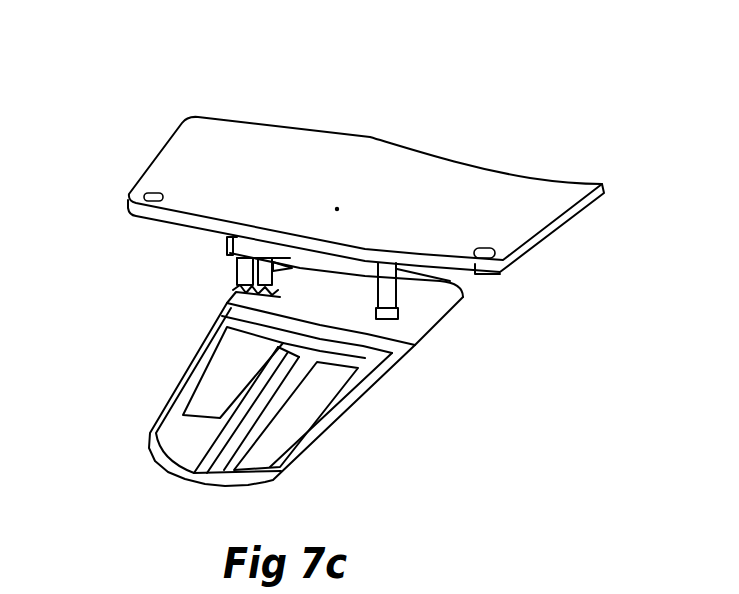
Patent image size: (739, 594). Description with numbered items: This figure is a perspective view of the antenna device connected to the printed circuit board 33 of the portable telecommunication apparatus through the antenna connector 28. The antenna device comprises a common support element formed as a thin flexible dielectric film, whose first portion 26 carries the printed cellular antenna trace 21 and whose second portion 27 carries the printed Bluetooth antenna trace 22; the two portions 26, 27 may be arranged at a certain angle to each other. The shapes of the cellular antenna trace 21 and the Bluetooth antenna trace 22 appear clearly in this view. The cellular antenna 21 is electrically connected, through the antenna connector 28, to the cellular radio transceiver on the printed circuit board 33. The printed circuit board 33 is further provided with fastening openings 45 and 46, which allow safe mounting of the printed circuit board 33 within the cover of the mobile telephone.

The cellular antenna 21 is at (177, 445).
The Bluetooth antenna 22 is at (462, 290).
The first portion of support element 26 is at (387, 348).
The second portion of support element 27 is at (422, 318).
The antenna connector 28 is at (227, 243).
The printed circuit board 33 is at (360, 165).
The fastening opening 45 is at (162, 191).
The fastening opening 46 is at (482, 248).